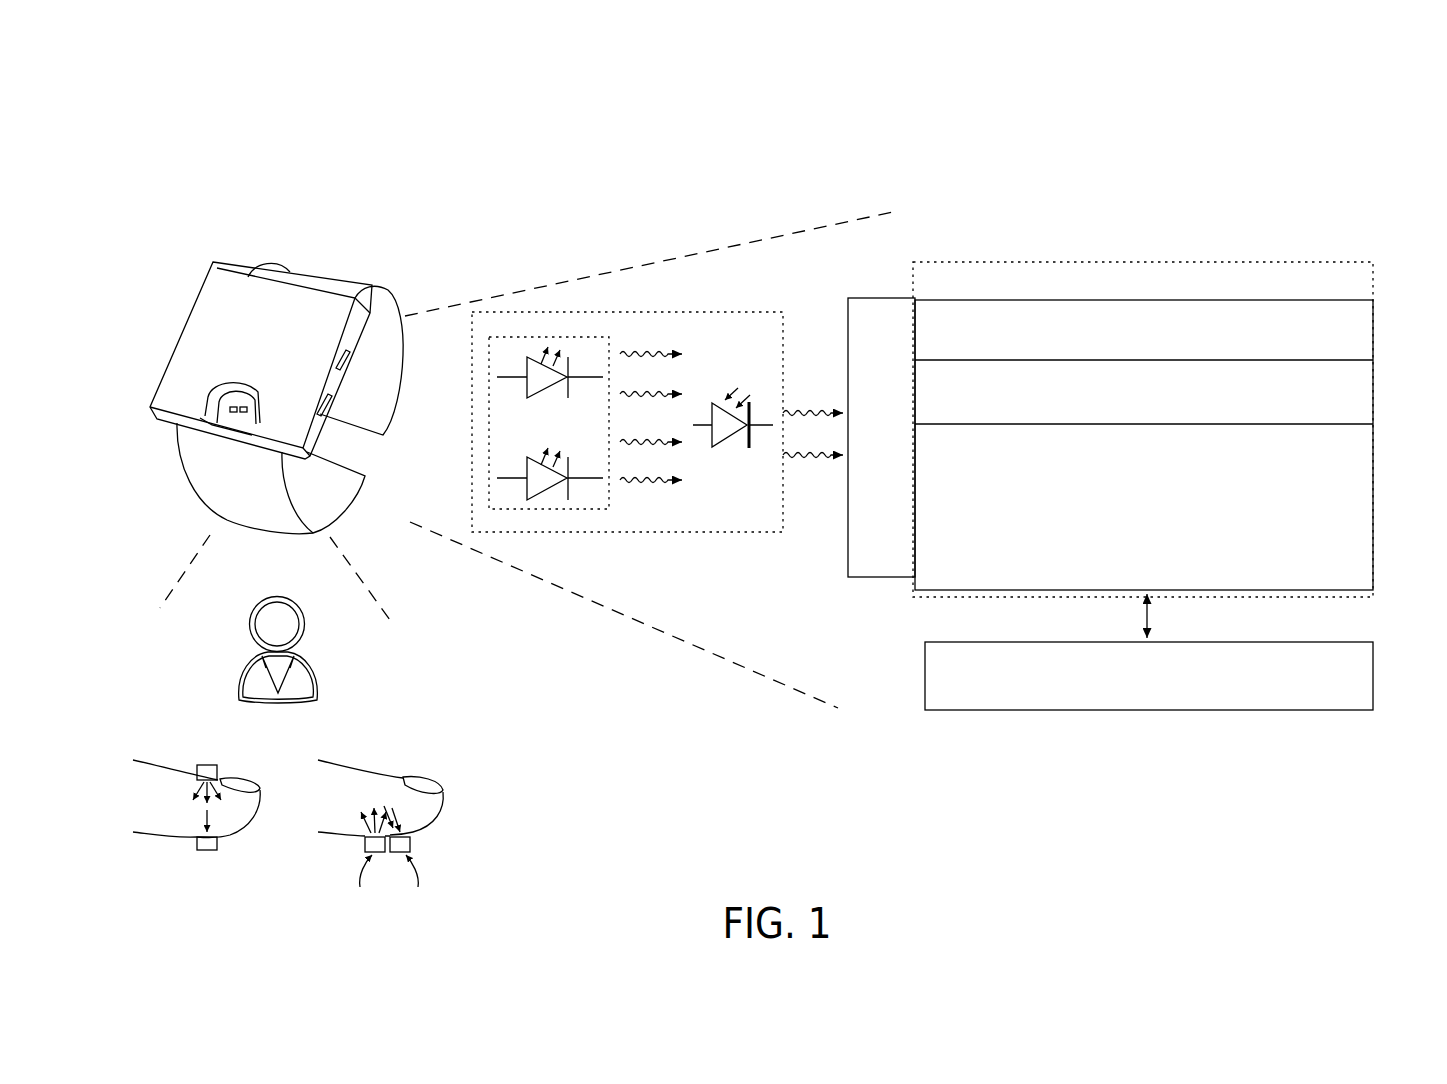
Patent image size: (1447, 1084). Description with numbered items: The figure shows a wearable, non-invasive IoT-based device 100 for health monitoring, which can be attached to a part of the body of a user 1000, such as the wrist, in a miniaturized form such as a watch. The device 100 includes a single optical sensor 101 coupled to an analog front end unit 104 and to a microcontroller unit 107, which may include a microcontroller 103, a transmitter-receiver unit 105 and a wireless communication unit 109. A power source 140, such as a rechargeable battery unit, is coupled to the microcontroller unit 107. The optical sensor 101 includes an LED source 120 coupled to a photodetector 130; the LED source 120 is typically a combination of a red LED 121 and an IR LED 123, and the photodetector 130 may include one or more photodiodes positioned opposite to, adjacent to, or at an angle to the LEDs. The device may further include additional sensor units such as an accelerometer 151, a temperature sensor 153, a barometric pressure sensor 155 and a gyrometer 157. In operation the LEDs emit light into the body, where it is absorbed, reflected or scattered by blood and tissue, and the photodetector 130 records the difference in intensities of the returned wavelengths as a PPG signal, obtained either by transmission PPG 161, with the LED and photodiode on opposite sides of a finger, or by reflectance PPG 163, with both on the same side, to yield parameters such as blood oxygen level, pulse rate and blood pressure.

The non-invasive IoT-based device 100 is at (883, 105).
The optical sensor 101 is at (245, 402).
The microcontroller 103 is at (1363, 330).
The analog front end (AFE) unit 104 is at (868, 572).
The transmitter-receiver unit 105 is at (1363, 393).
The microcontroller unit 107 is at (1134, 260).
The wireless communication unit 109 is at (1370, 512).
The LED source 120 is at (561, 511).
The red LED 121 is at (528, 358).
The IR LED 123 is at (557, 479).
The photodetector 130 is at (730, 447).
The power source 140 is at (1368, 673).
The accelerometer 151 is at (213, 340).
The temperature sensor 153 is at (174, 331).
The barometric pressure sensor 155 is at (242, 313).
The gyrometer 157 is at (278, 285).
The transmission PPG 161 is at (130, 800).
The reflectance PPG 163 is at (313, 803).
The user 1000 is at (248, 674).